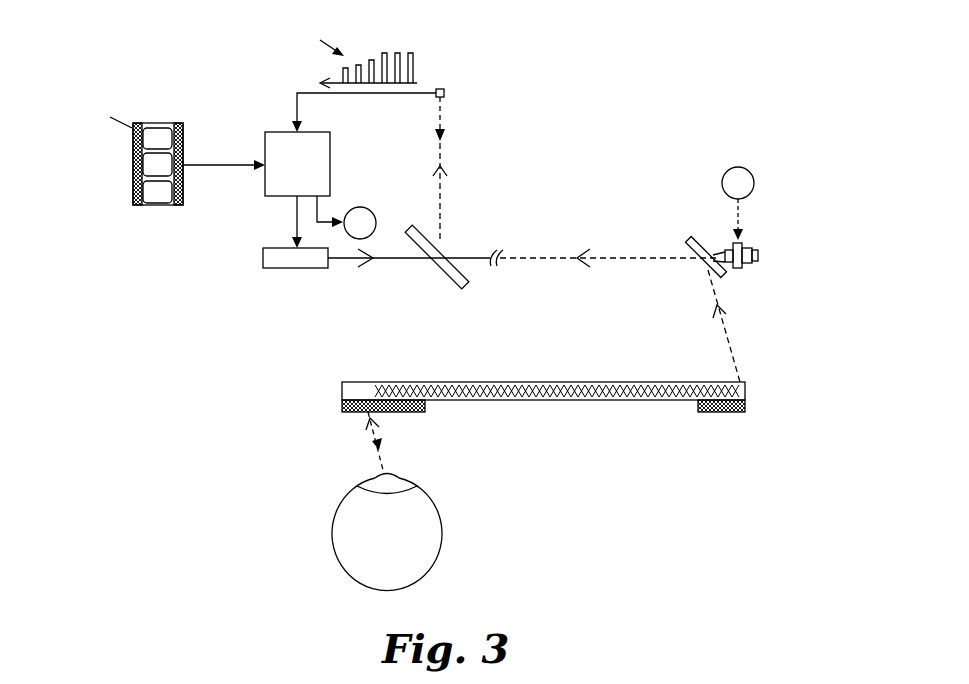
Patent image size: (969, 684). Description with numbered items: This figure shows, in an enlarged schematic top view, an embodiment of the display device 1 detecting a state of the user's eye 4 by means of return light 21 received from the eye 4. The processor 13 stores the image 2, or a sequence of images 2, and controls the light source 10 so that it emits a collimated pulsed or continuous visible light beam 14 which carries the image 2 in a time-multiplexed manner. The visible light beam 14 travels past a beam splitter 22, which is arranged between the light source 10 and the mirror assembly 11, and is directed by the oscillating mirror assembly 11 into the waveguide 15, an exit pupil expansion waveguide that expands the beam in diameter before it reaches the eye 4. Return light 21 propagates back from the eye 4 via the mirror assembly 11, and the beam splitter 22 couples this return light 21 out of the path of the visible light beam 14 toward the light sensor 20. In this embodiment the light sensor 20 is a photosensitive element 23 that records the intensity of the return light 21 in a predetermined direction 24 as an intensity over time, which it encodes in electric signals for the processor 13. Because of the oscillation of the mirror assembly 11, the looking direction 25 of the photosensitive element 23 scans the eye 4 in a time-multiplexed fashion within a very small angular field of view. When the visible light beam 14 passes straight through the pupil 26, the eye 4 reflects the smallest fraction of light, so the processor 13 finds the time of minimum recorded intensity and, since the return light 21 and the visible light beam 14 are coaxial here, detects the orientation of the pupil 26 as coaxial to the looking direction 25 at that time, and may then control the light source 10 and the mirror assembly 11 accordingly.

The display device 1 is at (162, 441).
The image 2 is at (156, 195).
The eye 4 is at (340, 553).
The light source 10 is at (274, 270).
The mirror assembly 11 is at (777, 241).
The processor 13 is at (332, 168).
The visible light beam 14 is at (386, 261).
The waveguide 15 is at (698, 441).
The light sensor 20 is at (502, 78).
The return light 21 is at (444, 222).
The beam splitter 22 is at (458, 280).
The photosensitive element 23 is at (441, 87).
The predetermined direction 24 is at (443, 117).
The looking direction 25 is at (373, 437).
The pupil 26 is at (381, 475).